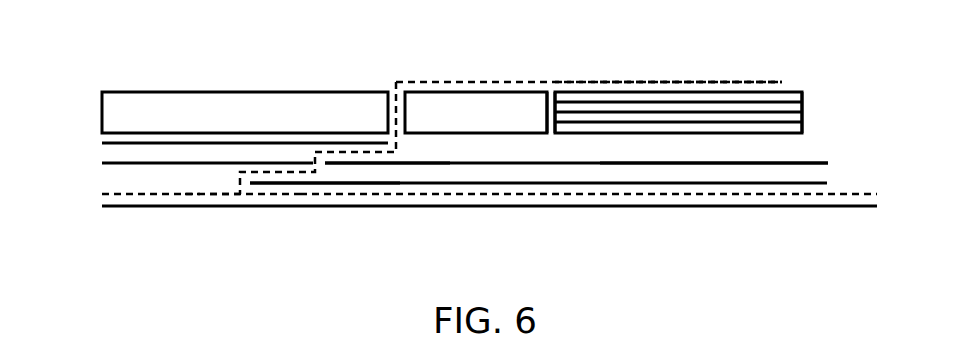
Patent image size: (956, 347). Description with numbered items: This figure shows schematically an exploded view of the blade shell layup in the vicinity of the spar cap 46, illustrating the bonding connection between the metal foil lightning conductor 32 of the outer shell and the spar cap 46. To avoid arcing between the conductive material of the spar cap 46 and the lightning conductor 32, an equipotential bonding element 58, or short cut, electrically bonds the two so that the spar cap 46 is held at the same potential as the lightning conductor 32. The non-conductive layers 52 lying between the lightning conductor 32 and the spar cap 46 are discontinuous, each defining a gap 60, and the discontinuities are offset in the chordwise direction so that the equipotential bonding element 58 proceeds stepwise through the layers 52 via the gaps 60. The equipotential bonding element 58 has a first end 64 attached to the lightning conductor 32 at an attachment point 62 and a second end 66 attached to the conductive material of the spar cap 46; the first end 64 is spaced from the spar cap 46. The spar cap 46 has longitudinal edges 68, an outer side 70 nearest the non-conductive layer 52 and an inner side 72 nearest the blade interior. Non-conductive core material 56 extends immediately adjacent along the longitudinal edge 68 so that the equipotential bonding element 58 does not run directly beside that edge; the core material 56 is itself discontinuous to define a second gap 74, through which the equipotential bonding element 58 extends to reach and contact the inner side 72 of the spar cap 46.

The lightning conductor 32 is at (860, 193).
The spar cap 46 is at (793, 97).
The non-conductive layers 52 is at (110, 143).
The core material 56 is at (168, 110).
The equipotential bonding element 58 is at (650, 78).
The gap 60 is at (287, 175).
The attachment point 62 is at (193, 195).
The first end 64 is at (218, 195).
The second end 66 is at (733, 82).
The longitudinal edge 68 is at (546, 117).
The outer side 70 is at (682, 138).
The inner side 72 is at (627, 90).
The second gap 74 is at (388, 83).